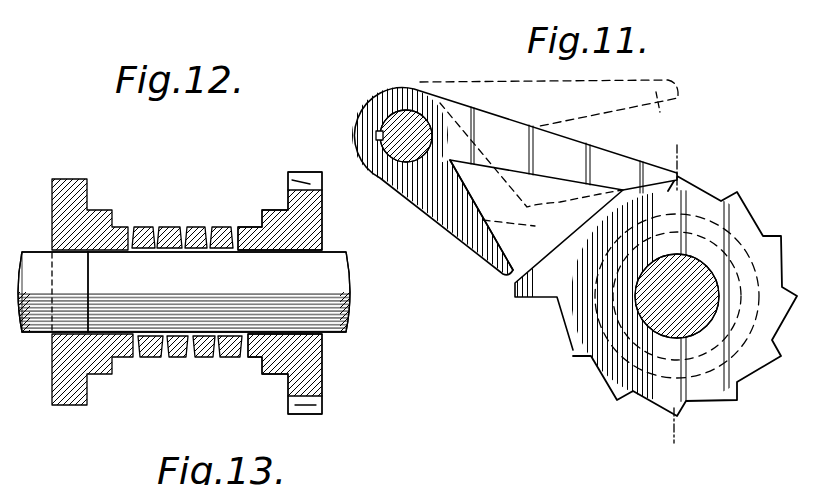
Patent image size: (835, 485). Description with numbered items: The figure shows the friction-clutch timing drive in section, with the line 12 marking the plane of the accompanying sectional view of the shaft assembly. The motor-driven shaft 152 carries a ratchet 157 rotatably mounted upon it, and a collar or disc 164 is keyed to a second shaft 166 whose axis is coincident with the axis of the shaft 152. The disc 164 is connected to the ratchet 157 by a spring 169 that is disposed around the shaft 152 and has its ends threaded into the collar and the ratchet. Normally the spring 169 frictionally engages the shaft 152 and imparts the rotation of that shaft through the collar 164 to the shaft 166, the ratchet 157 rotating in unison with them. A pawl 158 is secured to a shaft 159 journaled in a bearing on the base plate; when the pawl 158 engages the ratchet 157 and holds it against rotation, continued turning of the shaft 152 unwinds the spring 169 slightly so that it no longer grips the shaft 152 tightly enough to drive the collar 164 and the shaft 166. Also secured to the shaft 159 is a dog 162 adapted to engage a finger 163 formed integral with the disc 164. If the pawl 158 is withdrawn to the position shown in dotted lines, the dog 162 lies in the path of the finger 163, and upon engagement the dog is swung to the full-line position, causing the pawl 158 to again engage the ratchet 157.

In FIG. 12, the shaft 152 is at (328, 283).
In FIG. 12, the ratchet 157 is at (298, 180).
In FIG. 11, the ratchet 157 is at (750, 357).
In FIG. 11, the pawl 158 is at (615, 162).
In FIG. 11, the shaft 159 is at (376, 133).
In FIG. 11, the dog 162 is at (483, 243).
In FIG. 11, the finger 163 is at (520, 281).
In FIG. 12, the disc 164 is at (68, 188).
In FIG. 11, the disc 164 is at (591, 367).
In FIG. 12, the shaft 166 is at (28, 262).
In FIG. 12, the spring 169 is at (167, 227).
In FIG. 11, the section line 12- 12 is at (677, 145).